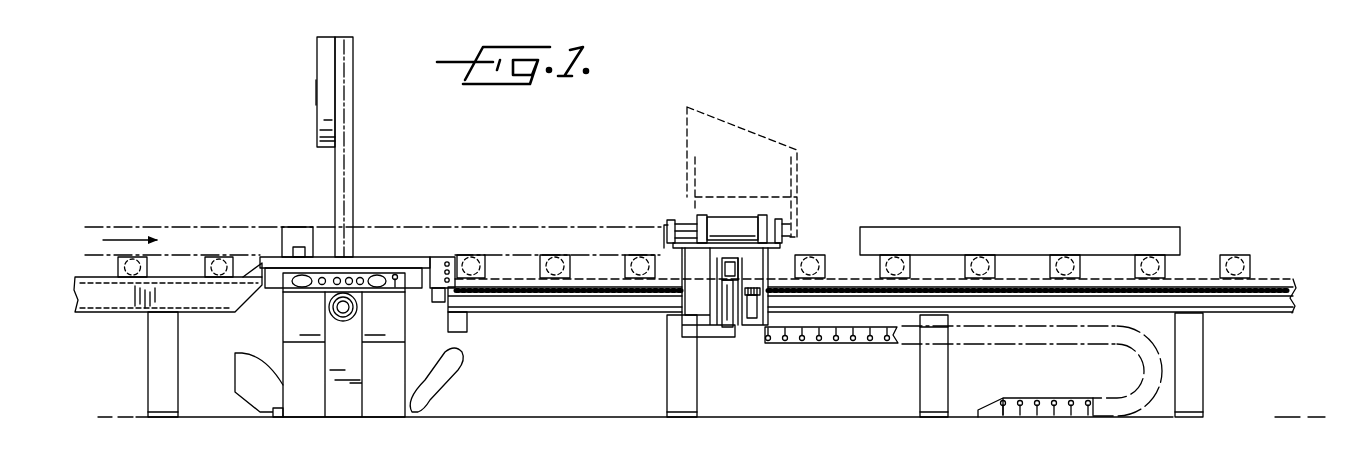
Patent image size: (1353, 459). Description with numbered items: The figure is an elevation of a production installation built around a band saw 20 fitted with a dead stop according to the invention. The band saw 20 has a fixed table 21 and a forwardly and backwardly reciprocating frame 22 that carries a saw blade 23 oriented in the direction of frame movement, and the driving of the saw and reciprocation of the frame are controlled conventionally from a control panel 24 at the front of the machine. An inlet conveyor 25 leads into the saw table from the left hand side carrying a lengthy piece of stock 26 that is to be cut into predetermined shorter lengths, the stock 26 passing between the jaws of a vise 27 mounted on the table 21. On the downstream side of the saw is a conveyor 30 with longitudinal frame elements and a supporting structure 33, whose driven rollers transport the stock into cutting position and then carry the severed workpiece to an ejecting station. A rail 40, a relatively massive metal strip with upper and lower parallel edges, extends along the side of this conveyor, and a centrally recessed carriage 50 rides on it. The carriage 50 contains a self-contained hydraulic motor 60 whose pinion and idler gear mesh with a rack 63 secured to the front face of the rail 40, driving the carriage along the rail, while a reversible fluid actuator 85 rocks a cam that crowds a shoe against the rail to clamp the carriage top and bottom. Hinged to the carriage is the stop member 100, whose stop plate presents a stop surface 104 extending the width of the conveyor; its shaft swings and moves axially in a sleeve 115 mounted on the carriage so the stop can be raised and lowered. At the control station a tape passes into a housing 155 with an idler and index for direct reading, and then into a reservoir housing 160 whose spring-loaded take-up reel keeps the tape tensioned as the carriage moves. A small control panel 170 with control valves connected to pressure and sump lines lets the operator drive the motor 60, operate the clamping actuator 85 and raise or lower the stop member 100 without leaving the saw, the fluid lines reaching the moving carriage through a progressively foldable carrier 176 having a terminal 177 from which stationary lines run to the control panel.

The band saw 20 is at (373, 167).
The fixed table 21 is at (380, 254).
The reciprocating frame 22 is at (355, 120).
The saw blade 23 is at (348, 216).
The control panel 24 is at (315, 288).
The inlet conveyor 25 is at (98, 316).
The stock 26 is at (203, 227).
The vise 27 is at (290, 227).
The conveyor 30 is at (565, 248).
The supporting structure 33 is at (668, 400).
The rail 40 is at (543, 300).
The carriage 50 is at (677, 334).
The hydraulic motor 60 is at (750, 318).
The rack 63 is at (584, 290).
The reversible fluid actuator 85 is at (722, 330).
The stop member 100 is at (800, 168).
The stop surface 104 is at (664, 247).
The sleeve 115 is at (737, 222).
The housing 155 is at (437, 303).
The reservoir housing 160 is at (466, 322).
The control panel 170 is at (448, 250).
The progressively foldable carrier 176 is at (842, 344).
The terminal 177 is at (998, 411).